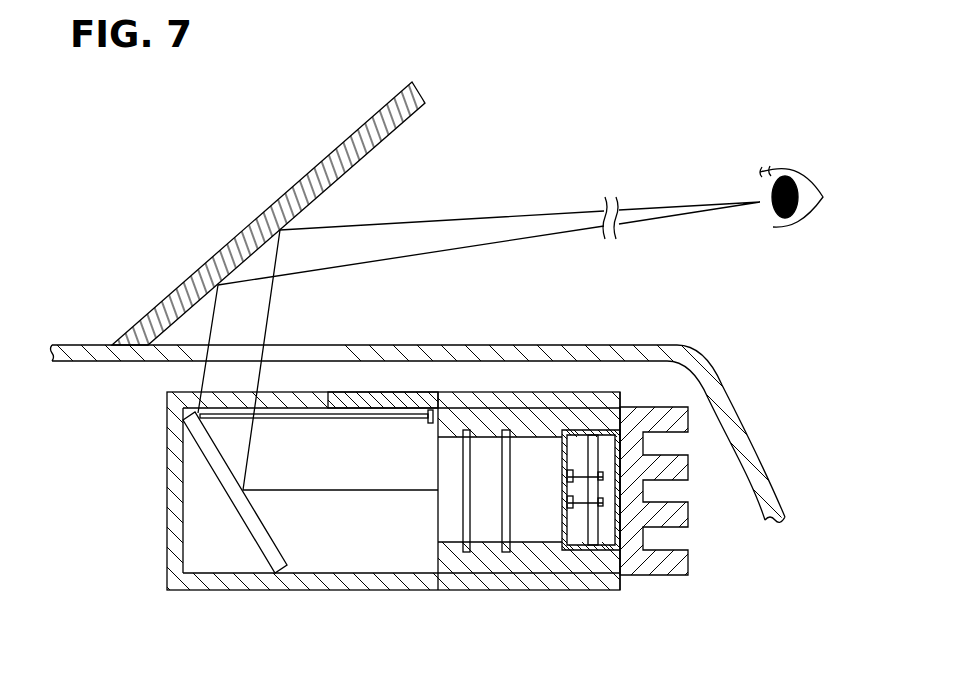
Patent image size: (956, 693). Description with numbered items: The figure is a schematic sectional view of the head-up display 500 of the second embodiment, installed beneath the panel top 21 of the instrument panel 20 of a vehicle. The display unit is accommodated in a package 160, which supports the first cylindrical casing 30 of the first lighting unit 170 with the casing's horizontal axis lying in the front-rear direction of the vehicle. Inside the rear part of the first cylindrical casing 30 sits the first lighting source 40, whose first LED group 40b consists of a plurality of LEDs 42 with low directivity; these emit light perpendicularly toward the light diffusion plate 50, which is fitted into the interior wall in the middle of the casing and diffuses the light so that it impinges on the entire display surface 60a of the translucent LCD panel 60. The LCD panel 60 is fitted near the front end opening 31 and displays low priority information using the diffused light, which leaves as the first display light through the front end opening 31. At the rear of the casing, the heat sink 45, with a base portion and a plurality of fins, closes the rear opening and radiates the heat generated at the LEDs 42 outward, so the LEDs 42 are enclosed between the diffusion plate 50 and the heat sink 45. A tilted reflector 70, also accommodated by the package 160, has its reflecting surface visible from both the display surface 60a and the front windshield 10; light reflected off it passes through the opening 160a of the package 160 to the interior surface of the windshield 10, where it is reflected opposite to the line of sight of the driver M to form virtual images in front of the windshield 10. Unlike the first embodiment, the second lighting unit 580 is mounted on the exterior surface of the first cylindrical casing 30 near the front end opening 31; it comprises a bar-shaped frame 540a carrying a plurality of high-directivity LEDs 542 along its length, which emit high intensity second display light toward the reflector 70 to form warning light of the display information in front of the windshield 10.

The front windshield 10 is at (384, 148).
The driver M is at (790, 178).
The instrument panel 20 is at (418, 413).
The panel top 21 is at (573, 349).
The first cylindrical casing 30 is at (503, 513).
The front end opening 31 is at (438, 440).
The first lighting source 40 is at (553, 469).
The first LED group 40b is at (567, 497).
The LEDs 42 is at (522, 548).
The heat sink 45 is at (688, 470).
The light diffusion plate 50 is at (497, 527).
The translucent LCD panel 60 is at (448, 491).
The display surface 60a is at (463, 470).
The reflector 70 is at (290, 551).
The package 160 is at (353, 483).
The opening of the package 160a is at (200, 393).
The first lighting unit 170 is at (442, 575).
The head-up display 500 is at (721, 580).
The bar-shaped frame 540a is at (434, 419).
The LEDs 542 is at (432, 409).
The second lighting unit 580 is at (412, 398).